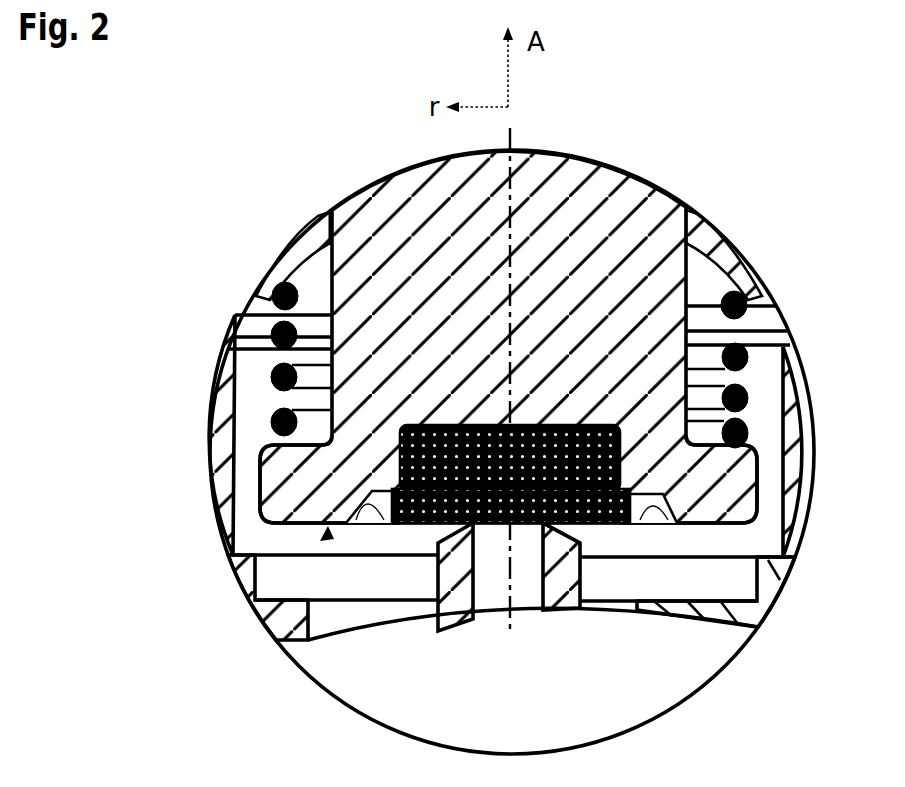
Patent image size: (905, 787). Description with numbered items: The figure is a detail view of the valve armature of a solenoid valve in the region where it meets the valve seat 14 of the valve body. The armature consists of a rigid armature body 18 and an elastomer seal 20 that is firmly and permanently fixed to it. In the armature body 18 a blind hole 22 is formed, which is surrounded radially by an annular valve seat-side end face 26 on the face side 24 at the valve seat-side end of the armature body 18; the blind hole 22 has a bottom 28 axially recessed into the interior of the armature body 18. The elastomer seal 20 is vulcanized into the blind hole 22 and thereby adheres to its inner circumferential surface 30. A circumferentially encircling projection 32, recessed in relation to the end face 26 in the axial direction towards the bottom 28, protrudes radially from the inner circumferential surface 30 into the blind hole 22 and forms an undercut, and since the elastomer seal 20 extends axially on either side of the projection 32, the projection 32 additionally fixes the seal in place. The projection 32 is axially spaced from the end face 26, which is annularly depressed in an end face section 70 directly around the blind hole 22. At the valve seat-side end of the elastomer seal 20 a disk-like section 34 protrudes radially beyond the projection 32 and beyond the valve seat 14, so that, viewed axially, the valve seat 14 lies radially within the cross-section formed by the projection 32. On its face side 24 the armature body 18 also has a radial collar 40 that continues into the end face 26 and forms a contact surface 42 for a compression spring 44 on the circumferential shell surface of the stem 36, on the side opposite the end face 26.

The valve seat 14 is at (468, 628).
The armature body 18 is at (607, 184).
The elastomer seal 20 is at (565, 535).
The blind hole 22 is at (650, 507).
The face side 24 is at (303, 612).
The end face 26 is at (307, 527).
The bottom 28 is at (558, 423).
The inner circumferential surface 30 is at (625, 440).
The projection 32 is at (634, 498).
The disk-like section 34 is at (382, 522).
The stem 36 is at (307, 276).
The radial collar 40 is at (278, 503).
The contact surface 42 is at (273, 438).
The compression spring 44 is at (272, 358).
The end face section 70 is at (328, 538).